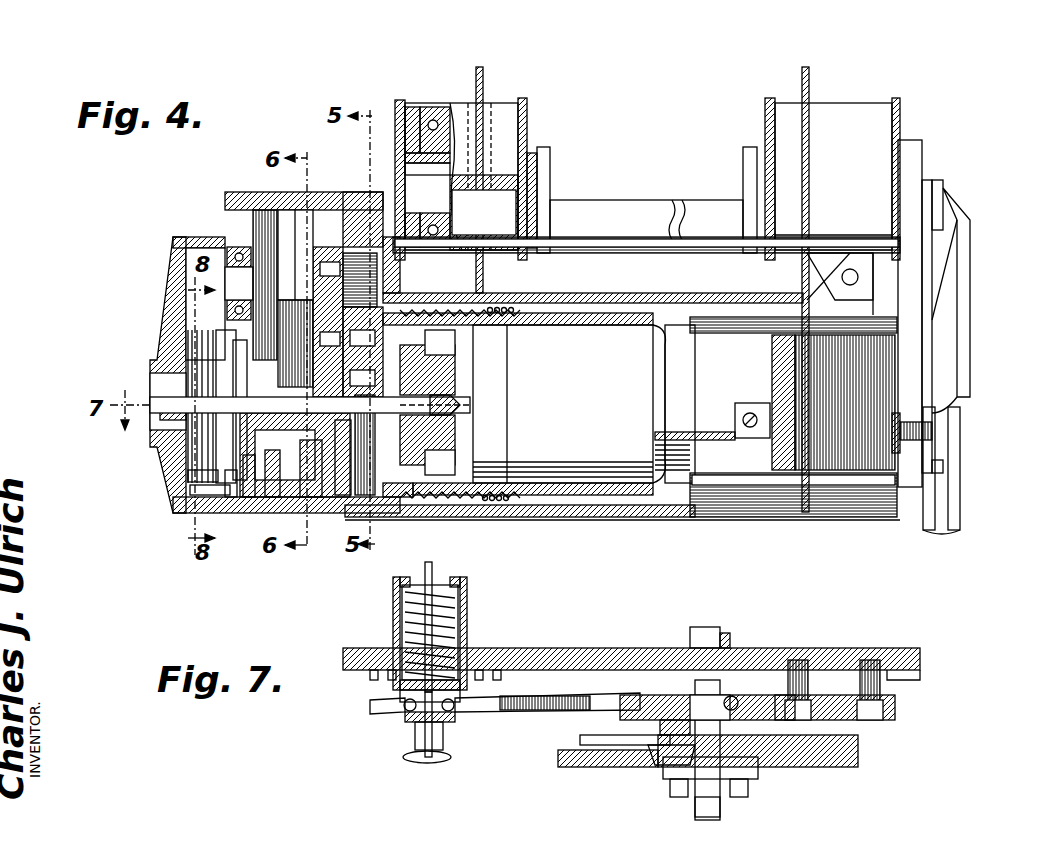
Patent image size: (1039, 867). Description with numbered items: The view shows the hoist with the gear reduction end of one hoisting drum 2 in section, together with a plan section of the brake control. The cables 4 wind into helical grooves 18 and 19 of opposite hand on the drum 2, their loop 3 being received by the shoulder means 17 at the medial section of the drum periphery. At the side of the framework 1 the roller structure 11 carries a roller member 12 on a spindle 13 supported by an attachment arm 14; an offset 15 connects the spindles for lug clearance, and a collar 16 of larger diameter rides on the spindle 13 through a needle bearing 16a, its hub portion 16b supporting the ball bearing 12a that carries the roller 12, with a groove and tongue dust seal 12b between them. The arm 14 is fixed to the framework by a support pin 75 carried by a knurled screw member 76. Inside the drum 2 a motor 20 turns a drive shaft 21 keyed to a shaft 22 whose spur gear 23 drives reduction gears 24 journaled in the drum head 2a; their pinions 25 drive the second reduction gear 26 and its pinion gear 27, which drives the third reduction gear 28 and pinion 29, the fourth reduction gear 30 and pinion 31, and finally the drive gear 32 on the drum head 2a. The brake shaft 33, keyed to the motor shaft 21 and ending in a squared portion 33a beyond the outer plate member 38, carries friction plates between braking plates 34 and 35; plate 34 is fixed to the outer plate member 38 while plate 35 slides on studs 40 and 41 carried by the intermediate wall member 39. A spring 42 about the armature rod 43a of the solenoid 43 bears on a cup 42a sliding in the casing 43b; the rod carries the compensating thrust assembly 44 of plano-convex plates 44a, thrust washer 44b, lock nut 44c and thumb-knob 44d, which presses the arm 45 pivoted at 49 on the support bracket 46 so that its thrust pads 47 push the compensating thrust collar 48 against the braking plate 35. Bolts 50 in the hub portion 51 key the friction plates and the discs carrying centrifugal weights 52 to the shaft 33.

In FIG. 4, the framework 1 is at (542, 517).
In FIG. 4, the hoisting drum 2 is at (614, 532).
In FIG. 4, the drum head 2a is at (402, 490).
In FIG. 4, the loop 3 is at (682, 440).
In FIG. 4, the cable 4 is at (481, 72).
In FIG. 4, the roller structure 11 is at (540, 137).
In FIG. 4, the roller member 12 is at (498, 103).
In FIG. 4, the ball bearing 12a is at (437, 125).
In FIG. 4, the groove and tongue dust seal 12b is at (410, 103).
In FIG. 4, the spindle 13 is at (462, 195).
In FIG. 4, the attachment arm 14 is at (378, 166).
In FIG. 4, the offset 15 is at (625, 207).
In FIG. 4, the collar 16 is at (397, 100).
In FIG. 4, the needle bearing 16a is at (412, 155).
In FIG. 4, the hub portion 16b is at (432, 138).
In FIG. 4, the shoulder means 17 is at (762, 405).
In FIG. 4, the helical groove 18 is at (478, 316).
In FIG. 4, the helical groove 19 is at (790, 368).
In FIG. 4, the motor 20 is at (569, 404).
In FIG. 4, the drive shaft 21 is at (455, 400).
In FIG. 4, the shaft 22 is at (445, 412).
In FIG. 4, the spur gear 23 is at (425, 372).
In FIG. 4, the reduction gear 24 is at (429, 445).
In FIG. 4, the pinion 25 is at (366, 505).
In FIG. 4, the second reduction gear 26 is at (400, 303).
In FIG. 4, the pinion gear 27 is at (322, 507).
In FIG. 4, the third reduction gear 28 is at (290, 300).
In FIG. 4, the pinion 29 is at (235, 333).
In FIG. 4, the fourth reduction gear 30 is at (262, 210).
In FIG. 4, the pinion 31 is at (378, 268).
In FIG. 4, the drive gear 32 is at (342, 515).
In FIG. 4, the shaft 33 is at (170, 420).
In FIG. 7, the shaft 33 is at (703, 628).
In FIG. 4, the squared-off end 33a is at (153, 403).
In FIG. 4, the braking plate 34 is at (192, 360).
In FIG. 4, the braking plate 35 is at (186, 350).
In FIG. 7, the braking plate 35 is at (585, 766).
In FIG. 4, the outer plate member 38 is at (200, 473).
In FIG. 4, the intermediate wall member 39 is at (285, 500).
In FIG. 7, the intermediate wall member 39 is at (573, 648).
In FIG. 7, the stud 40 is at (600, 742).
In FIG. 7, the stud 41 is at (860, 744).
In FIG. 7, the spring 42 is at (468, 602).
In FIG. 7, the cup 42a is at (452, 622).
In FIG. 4, the solenoid 43 is at (250, 513).
In FIG. 7, the armature rod 43a is at (436, 564).
In FIG. 7, the casing 43b is at (393, 624).
In FIG. 4, the compensating thrust assembly 44 is at (228, 513).
In FIG. 7, the compensating thrust assembly 44 is at (392, 727).
In FIG. 7, the plano-convex plate 44a is at (458, 718).
In FIG. 7, the thrust washer 44b is at (408, 732).
In FIG. 7, the lock nut 44c is at (445, 745).
In FIG. 7, the thumb-knob 44d is at (428, 763).
In FIG. 4, the arm 45 is at (196, 490).
In FIG. 7, the arm 45 is at (520, 712).
In FIG. 7, the support bracket 46 is at (820, 698).
In FIG. 7, the thrust pad 47 is at (700, 715).
In FIG. 7, the compensating thrust collar 48 is at (665, 760).
In FIG. 7, the pivot 49 is at (733, 697).
In FIG. 7, the bolt 50 is at (675, 792).
In FIG. 7, the hub portion 51 is at (760, 772).
In FIG. 4, the weight 52 is at (200, 368).
In FIG. 4, the support pin 75 is at (935, 452).
In FIG. 4, the knurled screw member 76 is at (895, 488).